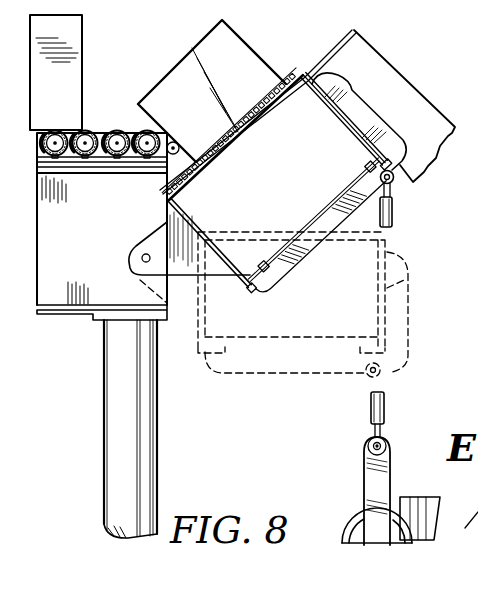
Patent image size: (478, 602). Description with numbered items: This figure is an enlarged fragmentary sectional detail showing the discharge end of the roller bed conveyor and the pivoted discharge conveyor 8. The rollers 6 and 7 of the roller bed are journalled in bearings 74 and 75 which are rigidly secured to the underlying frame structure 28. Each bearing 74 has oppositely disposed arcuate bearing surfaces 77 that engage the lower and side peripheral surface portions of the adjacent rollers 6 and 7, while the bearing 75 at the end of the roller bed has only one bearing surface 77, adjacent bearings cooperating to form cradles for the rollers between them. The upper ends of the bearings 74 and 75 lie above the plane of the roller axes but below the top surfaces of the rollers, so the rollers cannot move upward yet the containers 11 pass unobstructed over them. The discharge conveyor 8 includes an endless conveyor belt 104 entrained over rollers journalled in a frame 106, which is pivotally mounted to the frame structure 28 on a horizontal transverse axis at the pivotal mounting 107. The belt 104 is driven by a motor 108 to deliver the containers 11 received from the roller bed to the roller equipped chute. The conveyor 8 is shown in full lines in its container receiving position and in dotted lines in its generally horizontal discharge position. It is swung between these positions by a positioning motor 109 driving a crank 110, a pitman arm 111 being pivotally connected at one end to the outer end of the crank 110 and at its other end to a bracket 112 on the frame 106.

The roller 6 is at (144, 134).
The roller 7 is at (118, 132).
The discharge conveyor 8 is at (304, 75).
The container 11 is at (226, 38).
The frame structure 28 is at (61, 316).
The bearing 74 is at (103, 133).
The bearing 75 is at (172, 142).
The arcuate bearing surface 77 is at (149, 133).
The endless conveyor belt 104 is at (240, 123).
The frame 106 is at (366, 126).
The pivotal mounting 107 is at (140, 258).
The motor 108 is at (392, 78).
The positioning motor 109 is at (427, 497).
The crank 110 is at (366, 479).
The pitman arm 111 is at (392, 212).
The bracket 112 is at (399, 157).